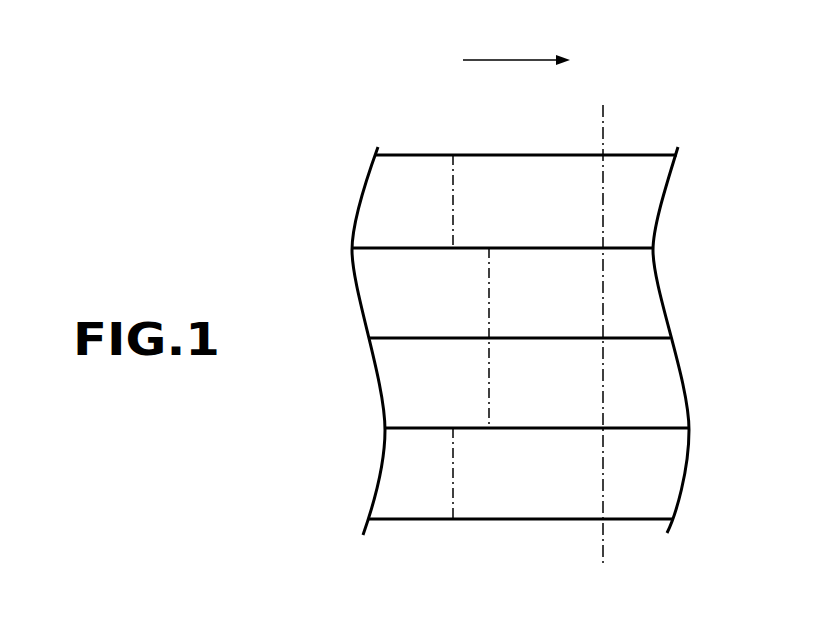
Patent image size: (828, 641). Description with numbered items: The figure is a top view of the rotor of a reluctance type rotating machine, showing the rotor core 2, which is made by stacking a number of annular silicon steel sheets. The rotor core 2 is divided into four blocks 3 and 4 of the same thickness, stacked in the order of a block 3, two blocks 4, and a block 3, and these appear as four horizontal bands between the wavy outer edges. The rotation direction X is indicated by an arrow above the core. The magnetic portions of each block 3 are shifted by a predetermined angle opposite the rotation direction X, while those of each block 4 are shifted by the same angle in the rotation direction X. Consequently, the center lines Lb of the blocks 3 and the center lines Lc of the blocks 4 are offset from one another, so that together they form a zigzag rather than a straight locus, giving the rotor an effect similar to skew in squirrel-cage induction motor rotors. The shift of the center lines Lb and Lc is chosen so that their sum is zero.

The rotor core 2 is at (643, 133).
The block 3 is at (400, 203).
The block 4 is at (400, 300).
The center line Lb is at (452, 203).
The center line Lc is at (489, 283).
The rotation direction X is at (519, 59).